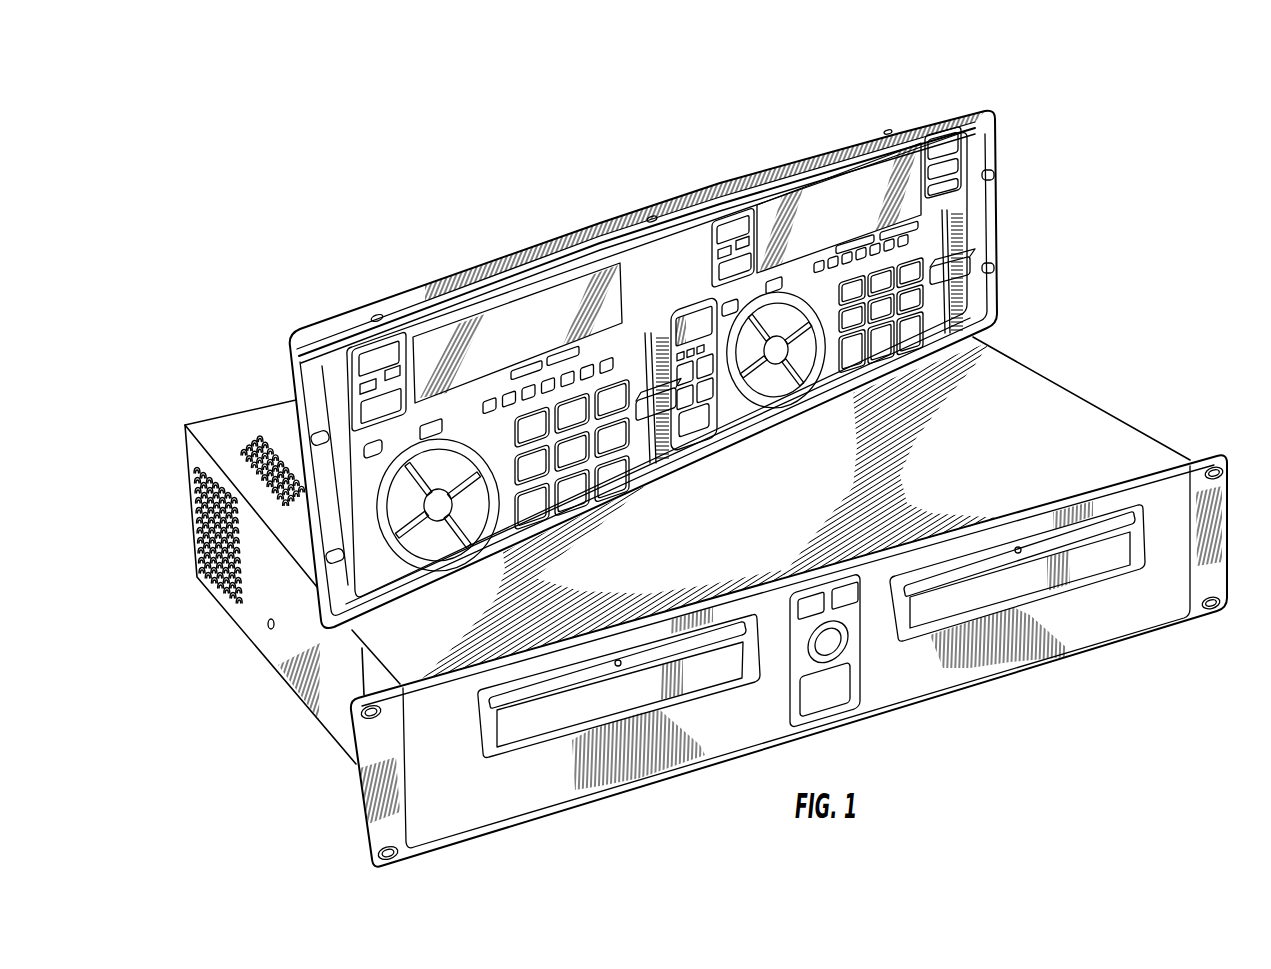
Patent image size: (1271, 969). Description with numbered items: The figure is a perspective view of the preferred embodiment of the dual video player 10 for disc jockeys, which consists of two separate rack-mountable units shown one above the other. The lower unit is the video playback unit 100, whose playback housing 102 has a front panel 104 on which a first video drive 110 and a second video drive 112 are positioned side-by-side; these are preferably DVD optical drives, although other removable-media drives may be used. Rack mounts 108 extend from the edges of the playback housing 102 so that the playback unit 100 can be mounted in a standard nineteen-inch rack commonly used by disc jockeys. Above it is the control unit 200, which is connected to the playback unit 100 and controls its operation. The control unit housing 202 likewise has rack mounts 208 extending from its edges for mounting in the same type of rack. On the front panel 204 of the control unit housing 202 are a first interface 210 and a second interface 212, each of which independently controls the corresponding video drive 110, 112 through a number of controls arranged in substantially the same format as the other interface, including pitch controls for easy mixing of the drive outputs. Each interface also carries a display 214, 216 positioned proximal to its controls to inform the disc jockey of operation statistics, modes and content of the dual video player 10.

The dual video player 10 is at (1122, 150).
The video playback unit 100 is at (1053, 377).
The playback housing 102 is at (1100, 415).
The front panel 104 is at (880, 682).
The rack mounts 108 is at (1220, 560).
The first video drive 110 is at (592, 708).
The second video drive 112 is at (1096, 563).
The control unit 200 is at (935, 108).
The control unit housing 202 is at (737, 170).
The front panel 204 is at (670, 246).
The rack mounts 208 is at (283, 403).
The first interface 210 is at (472, 412).
The second interface 212 is at (802, 276).
The display 214 is at (527, 310).
The display 216 is at (850, 188).